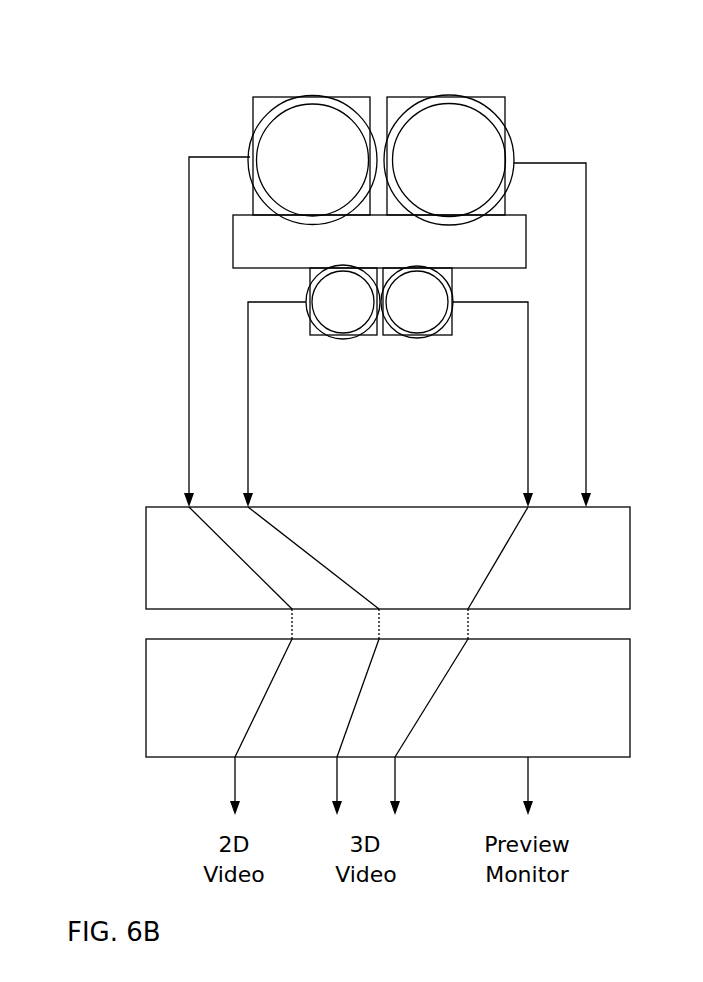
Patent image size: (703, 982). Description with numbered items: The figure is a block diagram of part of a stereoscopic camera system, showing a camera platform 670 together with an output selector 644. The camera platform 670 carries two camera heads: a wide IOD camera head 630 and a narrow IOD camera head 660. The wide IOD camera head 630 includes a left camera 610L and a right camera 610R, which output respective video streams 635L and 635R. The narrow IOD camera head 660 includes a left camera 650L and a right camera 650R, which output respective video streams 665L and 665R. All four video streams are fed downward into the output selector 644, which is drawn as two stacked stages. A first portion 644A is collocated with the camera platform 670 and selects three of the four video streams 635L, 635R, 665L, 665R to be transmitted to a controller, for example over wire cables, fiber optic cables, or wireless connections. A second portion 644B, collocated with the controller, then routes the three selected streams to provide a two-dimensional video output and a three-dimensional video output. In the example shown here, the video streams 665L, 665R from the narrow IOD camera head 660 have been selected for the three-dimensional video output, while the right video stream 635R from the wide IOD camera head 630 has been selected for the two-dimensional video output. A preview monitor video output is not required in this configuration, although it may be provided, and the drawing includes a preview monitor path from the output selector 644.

The camera platform 670 is at (184, 58).
The right camera 610R is at (253, 116).
The left camera 610L is at (507, 110).
The wide IOD camera head 630 is at (146, 156).
The narrow IOD camera head 660 is at (146, 301).
The right camera 650R is at (310, 335).
The left camera 650L is at (452, 335).
The video stream 635R is at (189, 450).
The video stream 635L is at (587, 418).
The video stream 665R is at (248, 448).
The video stream 665L is at (528, 448).
The output selector 644 is at (132, 772).
The first portion 644A is at (388, 558).
The second portion 644B is at (388, 698).